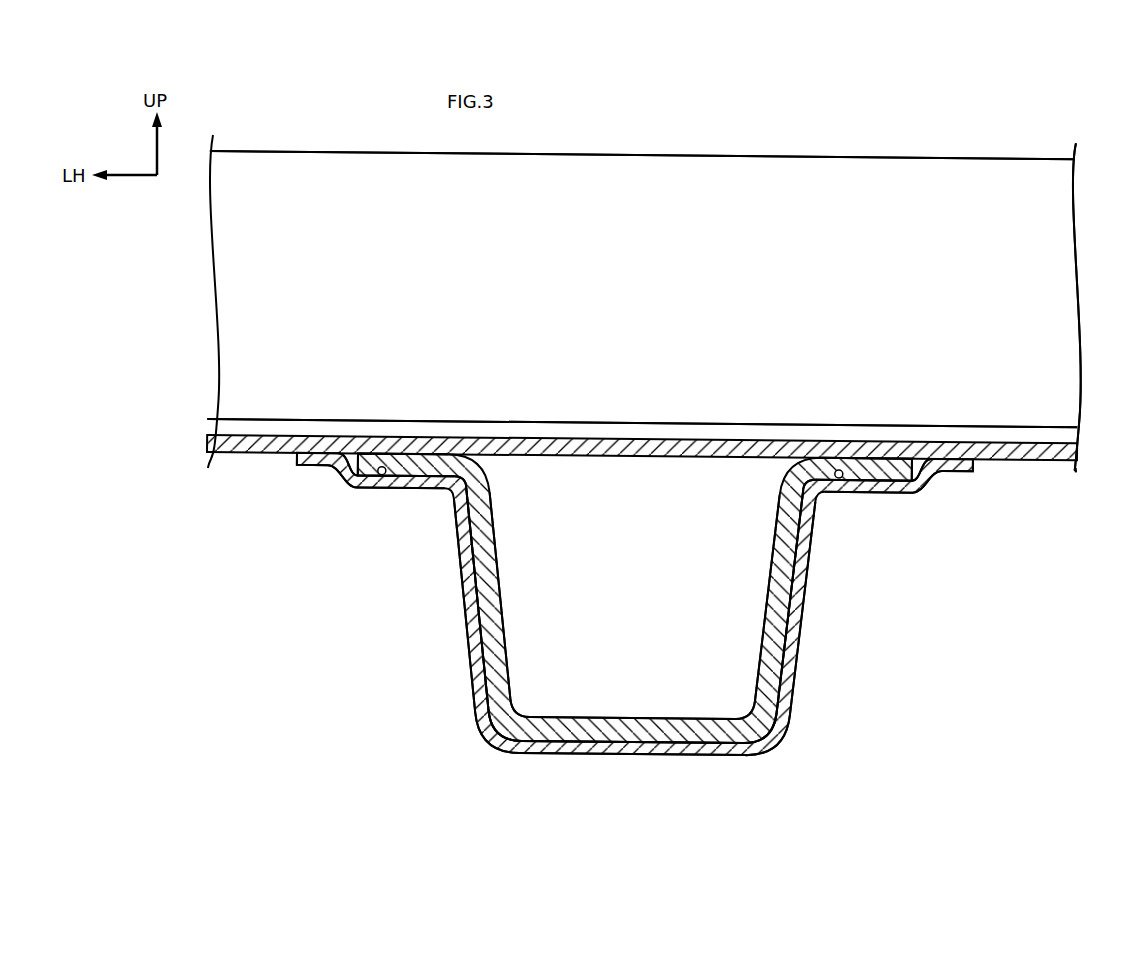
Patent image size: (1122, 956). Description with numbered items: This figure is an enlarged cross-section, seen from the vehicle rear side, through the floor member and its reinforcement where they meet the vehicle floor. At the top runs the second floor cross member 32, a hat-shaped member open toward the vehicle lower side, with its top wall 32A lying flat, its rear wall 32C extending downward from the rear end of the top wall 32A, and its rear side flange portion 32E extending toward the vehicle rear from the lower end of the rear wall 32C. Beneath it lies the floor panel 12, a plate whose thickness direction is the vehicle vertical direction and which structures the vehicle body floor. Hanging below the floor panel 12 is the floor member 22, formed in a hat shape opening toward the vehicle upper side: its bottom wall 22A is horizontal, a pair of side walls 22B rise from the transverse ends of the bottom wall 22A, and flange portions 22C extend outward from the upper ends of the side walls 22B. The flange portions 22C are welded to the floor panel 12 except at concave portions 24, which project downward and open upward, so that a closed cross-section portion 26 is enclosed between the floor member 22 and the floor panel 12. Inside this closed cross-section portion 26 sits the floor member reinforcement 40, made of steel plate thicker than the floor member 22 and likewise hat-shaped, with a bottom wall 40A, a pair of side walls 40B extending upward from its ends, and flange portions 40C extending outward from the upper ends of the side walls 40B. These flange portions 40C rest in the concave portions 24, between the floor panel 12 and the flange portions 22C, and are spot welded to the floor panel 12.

The floor panel 12 is at (976, 440).
The floor member 22 is at (807, 623).
The bottom wall 22A is at (640, 755).
The side walls 22B is at (458, 600).
The flange portions 22C is at (353, 489).
The concave portions 24 is at (386, 476).
The closed cross-section portion 26 is at (643, 587).
The second floor cross member 32 is at (831, 154).
The top wall 32A is at (663, 153).
The rear wall 32C is at (948, 187).
The rear side flange portion 32E is at (1031, 425).
The floor member reinforcement 40 is at (509, 658).
The bottom wall 40A is at (641, 716).
The side walls 40B is at (495, 548).
The flange portions 40C is at (399, 450).